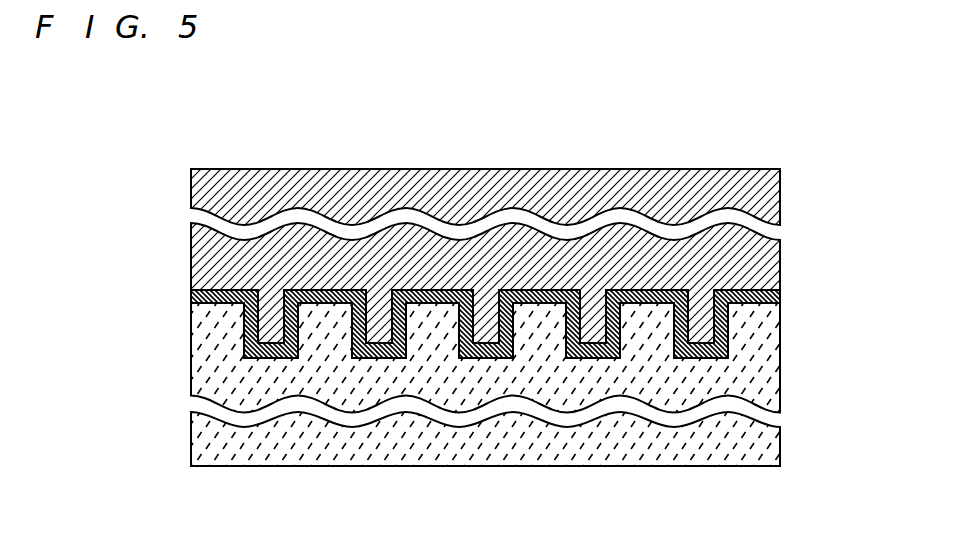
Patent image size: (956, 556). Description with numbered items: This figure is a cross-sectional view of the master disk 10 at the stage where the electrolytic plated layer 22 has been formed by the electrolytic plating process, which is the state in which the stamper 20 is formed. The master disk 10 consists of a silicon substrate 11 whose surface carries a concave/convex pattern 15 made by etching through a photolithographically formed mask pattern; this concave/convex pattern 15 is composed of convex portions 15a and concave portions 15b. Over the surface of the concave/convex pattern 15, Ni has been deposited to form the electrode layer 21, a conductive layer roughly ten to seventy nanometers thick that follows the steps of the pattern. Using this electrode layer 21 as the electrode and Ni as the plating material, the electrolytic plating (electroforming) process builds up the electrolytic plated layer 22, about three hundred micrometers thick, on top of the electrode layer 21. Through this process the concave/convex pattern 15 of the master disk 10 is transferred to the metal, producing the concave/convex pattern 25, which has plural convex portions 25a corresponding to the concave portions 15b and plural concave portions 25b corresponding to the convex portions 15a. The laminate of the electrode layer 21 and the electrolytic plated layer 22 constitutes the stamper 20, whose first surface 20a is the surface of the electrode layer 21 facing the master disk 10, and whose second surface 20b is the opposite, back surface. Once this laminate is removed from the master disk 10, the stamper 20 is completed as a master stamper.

The master disk 10 is at (493, 384).
The silicon substrate 11 is at (768, 390).
The concave/convex pattern 15 is at (446, 304).
The convex portions 15a is at (332, 330).
The concave portions 15b is at (378, 330).
The stamper 20 is at (493, 263).
The first surface 20a is at (271, 358).
The second surface 20b is at (233, 169).
The electrode layer 21 is at (773, 301).
The electrolytic plated layer 22 is at (768, 267).
The concave/convex pattern 25 is at (473, 358).
The convex portions 25a is at (588, 329).
The concave portions 25b is at (540, 329).